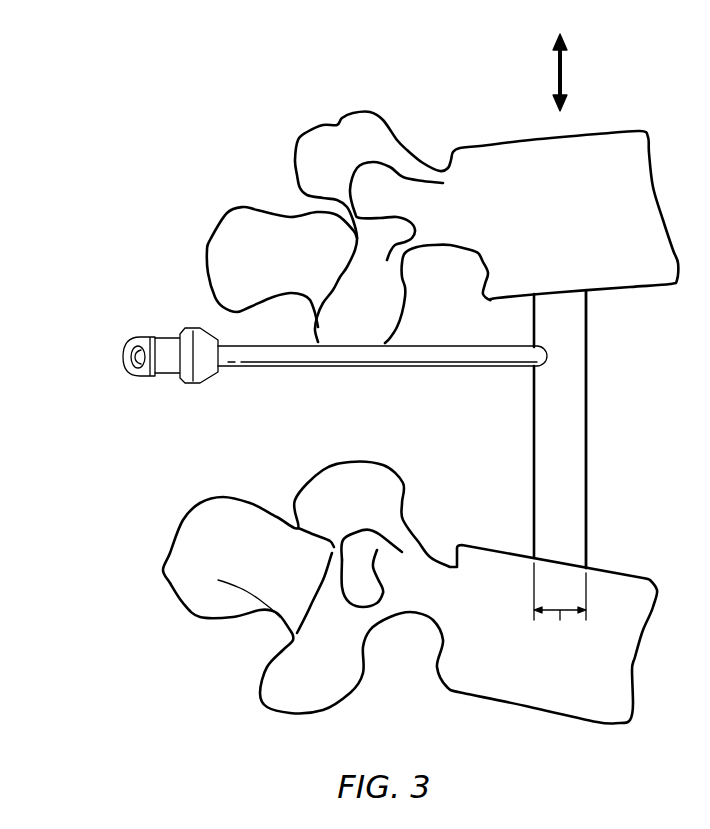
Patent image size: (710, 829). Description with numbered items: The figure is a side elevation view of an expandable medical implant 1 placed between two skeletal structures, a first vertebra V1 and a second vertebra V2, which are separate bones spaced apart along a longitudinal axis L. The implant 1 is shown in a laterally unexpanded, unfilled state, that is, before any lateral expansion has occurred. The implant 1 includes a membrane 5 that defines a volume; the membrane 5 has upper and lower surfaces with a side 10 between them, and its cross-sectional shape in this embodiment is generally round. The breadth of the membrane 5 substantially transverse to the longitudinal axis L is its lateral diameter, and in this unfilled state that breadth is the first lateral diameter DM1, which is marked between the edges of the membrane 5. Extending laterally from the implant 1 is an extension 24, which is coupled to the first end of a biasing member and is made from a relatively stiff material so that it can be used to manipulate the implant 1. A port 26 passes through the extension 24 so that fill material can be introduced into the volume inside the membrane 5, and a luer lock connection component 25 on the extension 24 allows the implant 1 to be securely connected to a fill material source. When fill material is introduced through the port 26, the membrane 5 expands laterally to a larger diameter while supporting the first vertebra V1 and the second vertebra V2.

The expandable medical implant 1 is at (568, 429).
The membrane 5 is at (594, 452).
The side 10 is at (532, 462).
The extension 24 is at (302, 368).
The luer lock connection component 25 is at (162, 337).
The port 26 is at (127, 370).
The first vertebra V1 is at (664, 203).
The second vertebra V2 is at (638, 677).
The first lateral diameter DM1 is at (560, 606).
The longitudinal axis L is at (564, 73).